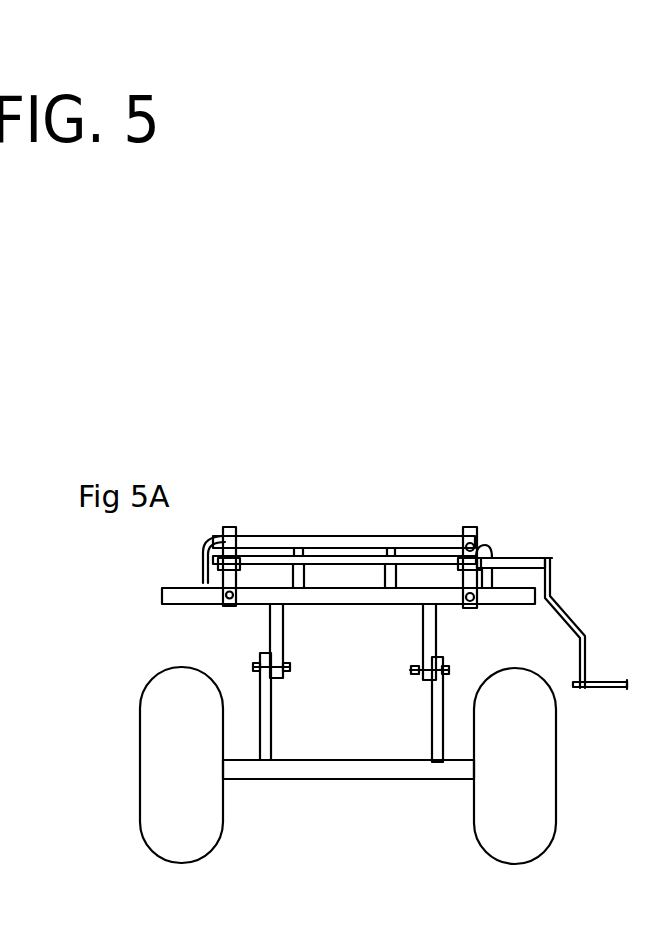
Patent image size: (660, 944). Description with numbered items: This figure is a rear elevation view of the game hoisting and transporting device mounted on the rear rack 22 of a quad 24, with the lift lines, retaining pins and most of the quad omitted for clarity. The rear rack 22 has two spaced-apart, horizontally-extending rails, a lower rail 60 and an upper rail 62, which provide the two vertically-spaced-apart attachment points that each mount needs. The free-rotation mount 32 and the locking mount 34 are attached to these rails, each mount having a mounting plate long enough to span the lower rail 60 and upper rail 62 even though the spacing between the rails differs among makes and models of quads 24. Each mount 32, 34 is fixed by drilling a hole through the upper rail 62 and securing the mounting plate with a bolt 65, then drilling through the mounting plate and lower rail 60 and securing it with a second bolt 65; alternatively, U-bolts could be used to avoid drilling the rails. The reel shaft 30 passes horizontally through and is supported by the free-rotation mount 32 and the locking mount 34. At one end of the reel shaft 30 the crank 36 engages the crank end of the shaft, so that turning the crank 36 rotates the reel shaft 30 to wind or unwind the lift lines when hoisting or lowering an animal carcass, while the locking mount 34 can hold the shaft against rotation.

The rear rack 22 is at (492, 578).
The quad 24 is at (127, 840).
The reel shaft 30 is at (352, 546).
The free-rotation mount 32 is at (228, 532).
The locking mount 34 is at (469, 534).
The crank 36 is at (563, 615).
The lower rail 60 is at (255, 597).
The upper rail 62 is at (405, 548).
The bolt 65 is at (207, 582).